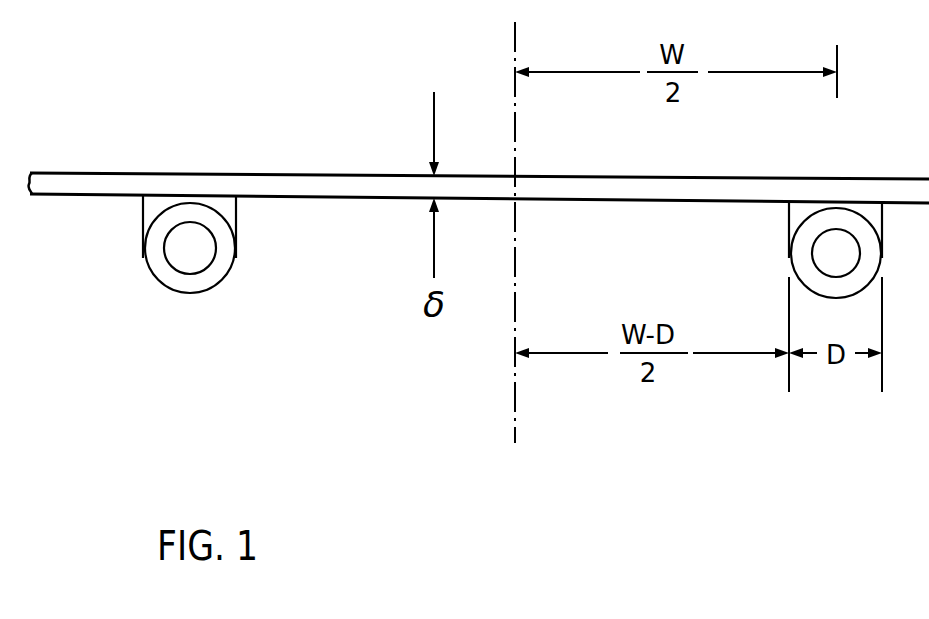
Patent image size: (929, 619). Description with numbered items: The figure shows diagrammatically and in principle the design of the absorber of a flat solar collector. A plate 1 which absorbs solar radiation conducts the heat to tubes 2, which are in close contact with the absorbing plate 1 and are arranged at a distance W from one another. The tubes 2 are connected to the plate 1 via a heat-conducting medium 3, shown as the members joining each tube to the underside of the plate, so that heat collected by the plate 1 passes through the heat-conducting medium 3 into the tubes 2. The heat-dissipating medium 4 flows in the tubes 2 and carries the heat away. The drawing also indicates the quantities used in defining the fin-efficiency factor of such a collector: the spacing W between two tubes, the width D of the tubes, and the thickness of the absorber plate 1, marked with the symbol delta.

The plate 1 is at (138, 181).
The tubes 2 is at (225, 263).
The heat-conducting medium 3 is at (236, 212).
The heat-dissipating medium 4 is at (176, 238).